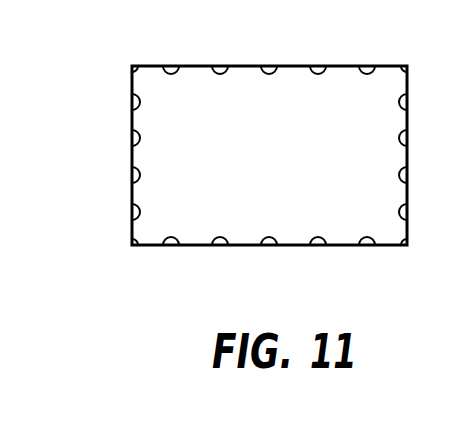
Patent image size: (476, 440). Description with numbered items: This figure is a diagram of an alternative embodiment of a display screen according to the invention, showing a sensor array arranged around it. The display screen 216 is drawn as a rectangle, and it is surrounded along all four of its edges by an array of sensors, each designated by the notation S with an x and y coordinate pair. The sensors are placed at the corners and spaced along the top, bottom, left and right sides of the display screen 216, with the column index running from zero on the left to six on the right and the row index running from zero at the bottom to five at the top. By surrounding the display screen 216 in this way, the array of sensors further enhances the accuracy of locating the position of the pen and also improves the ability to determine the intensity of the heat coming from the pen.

The display screen 216 is at (352, 112).